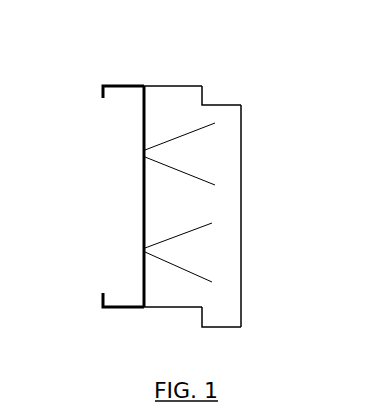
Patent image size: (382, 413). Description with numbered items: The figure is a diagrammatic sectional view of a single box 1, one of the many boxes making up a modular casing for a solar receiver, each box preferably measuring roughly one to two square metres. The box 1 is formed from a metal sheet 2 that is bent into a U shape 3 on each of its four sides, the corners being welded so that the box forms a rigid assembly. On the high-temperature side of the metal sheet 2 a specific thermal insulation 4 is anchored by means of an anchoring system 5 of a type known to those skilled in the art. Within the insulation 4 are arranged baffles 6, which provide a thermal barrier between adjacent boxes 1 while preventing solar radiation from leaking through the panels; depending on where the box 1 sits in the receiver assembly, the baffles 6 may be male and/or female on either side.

The box 1 is at (180, 195).
The metal sheet 2 is at (181, 80).
The U shape 3 is at (114, 107).
The thermal insulation 4 is at (222, 155).
The anchoring system 5 is at (222, 187).
The baffles 6 is at (230, 97).